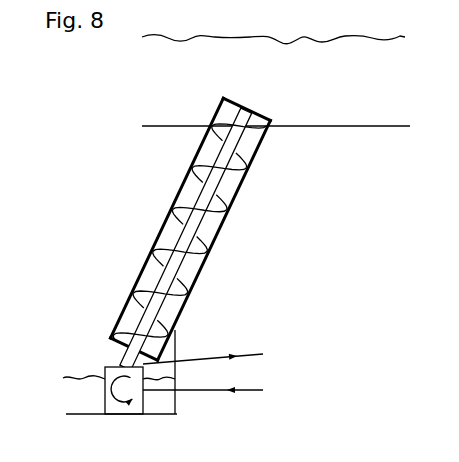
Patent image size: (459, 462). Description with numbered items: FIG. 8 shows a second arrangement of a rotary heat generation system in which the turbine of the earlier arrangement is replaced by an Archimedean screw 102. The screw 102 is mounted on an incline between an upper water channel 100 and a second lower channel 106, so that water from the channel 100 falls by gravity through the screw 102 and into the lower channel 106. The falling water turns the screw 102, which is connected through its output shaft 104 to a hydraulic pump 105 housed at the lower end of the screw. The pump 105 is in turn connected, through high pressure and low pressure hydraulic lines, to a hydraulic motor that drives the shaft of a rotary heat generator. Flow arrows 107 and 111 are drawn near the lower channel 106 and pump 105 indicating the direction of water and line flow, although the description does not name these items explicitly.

The water channel 100 is at (348, 87).
The Archimedean screw 102 is at (235, 185).
The output shaft 104 is at (123, 362).
The hydraulic pump 105 is at (133, 410).
The second lower channel 106 is at (82, 400).
The outflow direction 107 is at (217, 355).
The return flow 111 is at (238, 390).